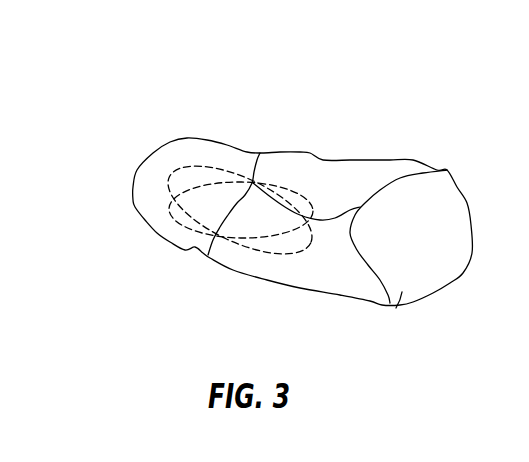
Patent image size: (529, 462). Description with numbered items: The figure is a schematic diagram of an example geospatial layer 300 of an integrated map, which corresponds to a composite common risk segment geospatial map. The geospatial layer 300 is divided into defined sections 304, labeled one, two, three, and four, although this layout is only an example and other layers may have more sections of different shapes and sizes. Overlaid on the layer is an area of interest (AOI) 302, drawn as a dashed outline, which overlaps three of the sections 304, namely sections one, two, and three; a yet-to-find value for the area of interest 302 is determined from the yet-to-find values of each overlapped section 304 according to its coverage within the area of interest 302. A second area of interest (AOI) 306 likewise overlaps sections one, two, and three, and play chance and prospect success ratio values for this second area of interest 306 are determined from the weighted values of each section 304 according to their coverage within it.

The geospatial layer 300 is at (110, 51).
The area of interest (AOI) 302 is at (283, 182).
The defined sections 304 is at (212, 142).
The second area of interest (AOI) 306 is at (257, 252).